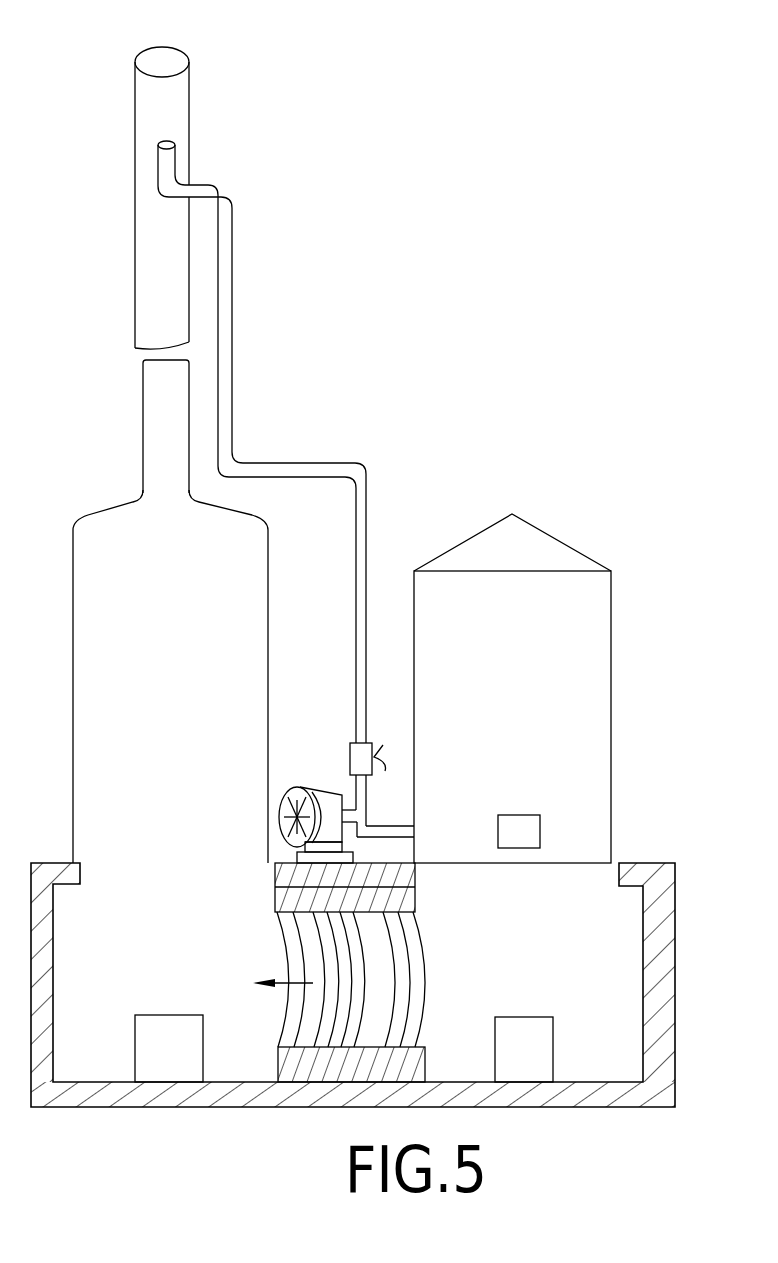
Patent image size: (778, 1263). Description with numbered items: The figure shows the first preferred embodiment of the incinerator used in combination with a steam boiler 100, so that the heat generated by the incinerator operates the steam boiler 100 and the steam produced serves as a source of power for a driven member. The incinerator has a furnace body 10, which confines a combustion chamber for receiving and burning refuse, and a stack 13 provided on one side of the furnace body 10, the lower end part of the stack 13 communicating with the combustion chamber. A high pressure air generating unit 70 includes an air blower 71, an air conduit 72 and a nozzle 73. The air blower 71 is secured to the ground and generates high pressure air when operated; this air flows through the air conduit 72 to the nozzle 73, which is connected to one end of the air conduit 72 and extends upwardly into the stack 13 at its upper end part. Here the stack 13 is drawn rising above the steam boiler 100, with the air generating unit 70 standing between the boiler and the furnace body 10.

The furnace body 10 is at (620, 628).
The stack 13 is at (163, 265).
The high pressure air generating unit 70 is at (350, 597).
The air blower 71 is at (297, 786).
The air conduit 72 is at (227, 340).
The nozzle 73 is at (170, 141).
The steam boiler 100 is at (70, 648).